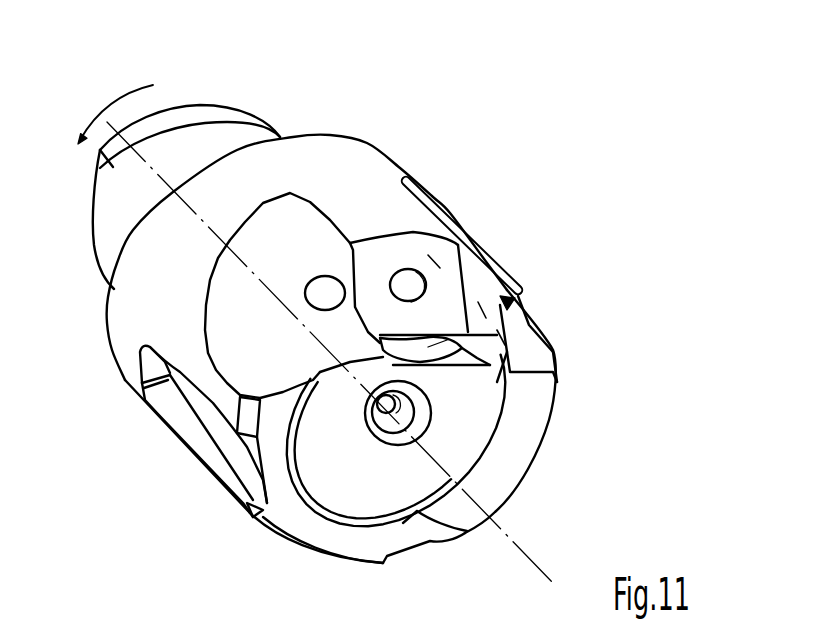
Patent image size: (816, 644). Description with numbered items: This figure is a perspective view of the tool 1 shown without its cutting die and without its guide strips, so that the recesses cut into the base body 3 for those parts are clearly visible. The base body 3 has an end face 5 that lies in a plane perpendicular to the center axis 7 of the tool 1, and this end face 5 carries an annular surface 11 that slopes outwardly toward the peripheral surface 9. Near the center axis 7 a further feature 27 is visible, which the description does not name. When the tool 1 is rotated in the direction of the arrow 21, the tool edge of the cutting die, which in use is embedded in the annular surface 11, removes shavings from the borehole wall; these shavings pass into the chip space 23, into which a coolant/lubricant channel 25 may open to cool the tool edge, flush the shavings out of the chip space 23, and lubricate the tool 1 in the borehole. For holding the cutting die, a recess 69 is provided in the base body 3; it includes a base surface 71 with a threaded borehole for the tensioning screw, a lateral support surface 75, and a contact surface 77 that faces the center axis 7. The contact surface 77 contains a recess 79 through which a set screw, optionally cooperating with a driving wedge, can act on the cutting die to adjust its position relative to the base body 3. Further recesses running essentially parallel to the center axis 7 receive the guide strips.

The tool 1 is at (503, 204).
The base body 3 is at (170, 270).
The end face 5 is at (469, 444).
The center axis 7 is at (545, 575).
The peripheral surface 9 is at (407, 184).
The annular surface 11 is at (290, 497).
The arrow 21 is at (113, 107).
The chip space 23 is at (257, 348).
The coolant/lubricant channel 25 is at (330, 287).
The central bore 27 is at (531, 561).
The recess 69 is at (428, 347).
The base surface 71 is at (409, 282).
The lateral support surface 75 is at (478, 302).
The contact surface 77 is at (473, 367).
The recess 79 is at (428, 255).